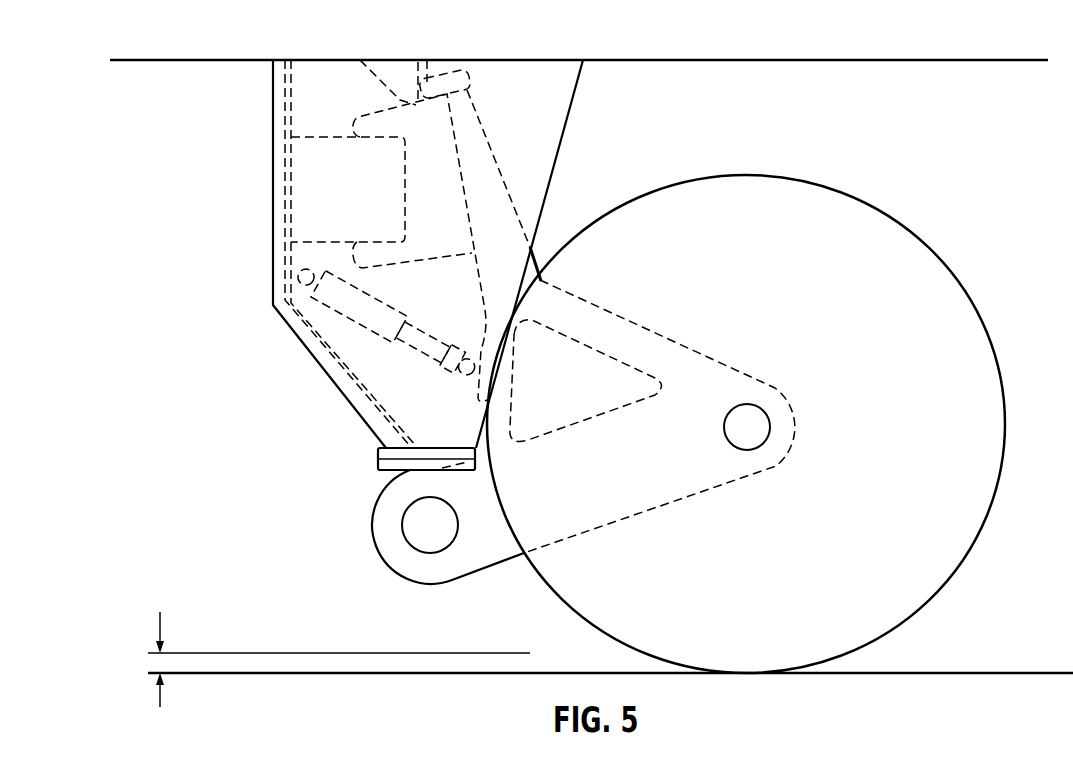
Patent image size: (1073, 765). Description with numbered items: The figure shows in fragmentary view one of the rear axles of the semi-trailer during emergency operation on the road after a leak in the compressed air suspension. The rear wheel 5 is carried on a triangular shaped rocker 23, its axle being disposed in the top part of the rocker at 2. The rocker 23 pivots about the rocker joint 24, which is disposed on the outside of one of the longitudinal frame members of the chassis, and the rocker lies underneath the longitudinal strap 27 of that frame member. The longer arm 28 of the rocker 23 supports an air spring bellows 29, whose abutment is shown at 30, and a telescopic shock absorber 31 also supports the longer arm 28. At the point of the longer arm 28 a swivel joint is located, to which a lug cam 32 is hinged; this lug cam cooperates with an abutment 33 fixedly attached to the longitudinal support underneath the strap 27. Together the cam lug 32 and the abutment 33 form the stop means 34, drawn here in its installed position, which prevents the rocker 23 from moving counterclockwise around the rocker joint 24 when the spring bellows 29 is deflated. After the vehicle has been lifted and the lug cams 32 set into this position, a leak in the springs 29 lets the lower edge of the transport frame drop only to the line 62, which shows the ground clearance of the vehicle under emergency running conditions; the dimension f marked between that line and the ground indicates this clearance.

The axle location 2 is at (760, 432).
The rear wheel 5 is at (983, 512).
The rocker 23 is at (497, 565).
The rocker joint 24 is at (408, 525).
The longitudinal strap 27 is at (761, 58).
The longer arm 28 is at (495, 167).
The air spring bellows 29 is at (433, 147).
The abutment 30 is at (317, 204).
The telescopic shock absorber 31 is at (470, 80).
The lug cam 32 is at (421, 60).
The abutment 33 is at (380, 78).
The stop means 34 is at (487, 55).
The line 62 is at (488, 650).
The clearance distance f is at (157, 662).